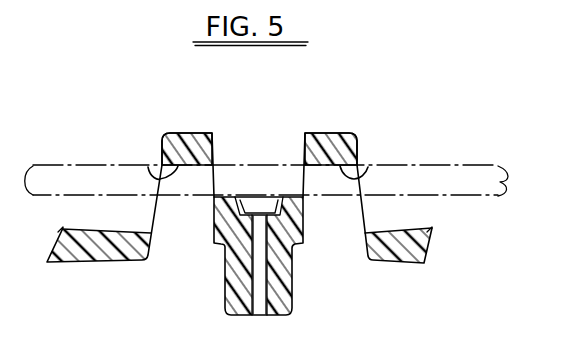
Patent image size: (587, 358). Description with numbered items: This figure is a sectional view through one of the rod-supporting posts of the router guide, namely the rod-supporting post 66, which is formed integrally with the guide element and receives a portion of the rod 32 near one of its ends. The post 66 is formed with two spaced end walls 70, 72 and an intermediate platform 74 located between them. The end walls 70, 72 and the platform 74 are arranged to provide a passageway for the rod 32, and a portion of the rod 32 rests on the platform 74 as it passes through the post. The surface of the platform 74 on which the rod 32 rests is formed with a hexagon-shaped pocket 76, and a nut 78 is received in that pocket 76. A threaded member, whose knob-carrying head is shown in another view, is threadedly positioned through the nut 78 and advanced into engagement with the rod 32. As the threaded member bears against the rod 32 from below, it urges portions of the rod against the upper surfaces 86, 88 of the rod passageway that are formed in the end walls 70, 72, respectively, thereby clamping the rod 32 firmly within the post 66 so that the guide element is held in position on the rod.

The rod 32 is at (481, 172).
The rod-supporting post 66 is at (357, 148).
The end wall 70 is at (185, 133).
The end wall 72 is at (325, 133).
The intermediate platform 74 is at (243, 207).
The hexagon-shaped pocket 76 is at (285, 212).
The nut 78 is at (242, 207).
The upper surface 86 is at (148, 167).
The upper surface 88 is at (364, 174).